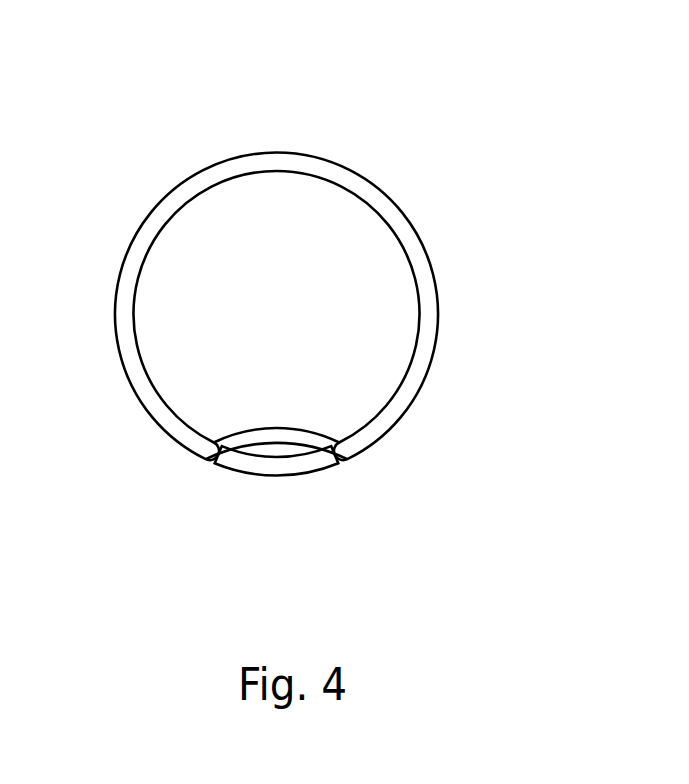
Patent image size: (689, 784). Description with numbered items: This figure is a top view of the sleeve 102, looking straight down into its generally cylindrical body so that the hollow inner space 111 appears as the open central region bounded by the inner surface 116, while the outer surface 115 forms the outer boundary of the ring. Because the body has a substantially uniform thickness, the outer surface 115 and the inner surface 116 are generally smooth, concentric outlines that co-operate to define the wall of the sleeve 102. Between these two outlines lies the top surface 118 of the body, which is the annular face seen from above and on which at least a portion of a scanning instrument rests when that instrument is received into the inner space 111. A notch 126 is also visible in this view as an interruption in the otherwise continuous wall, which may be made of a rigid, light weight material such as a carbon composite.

The sleeve 102 is at (302, 246).
The inner space 111 is at (262, 328).
The outer surface 115 is at (406, 188).
The inner surface 116 is at (156, 218).
The top surface 118 is at (451, 335).
The notch 126 is at (296, 465).